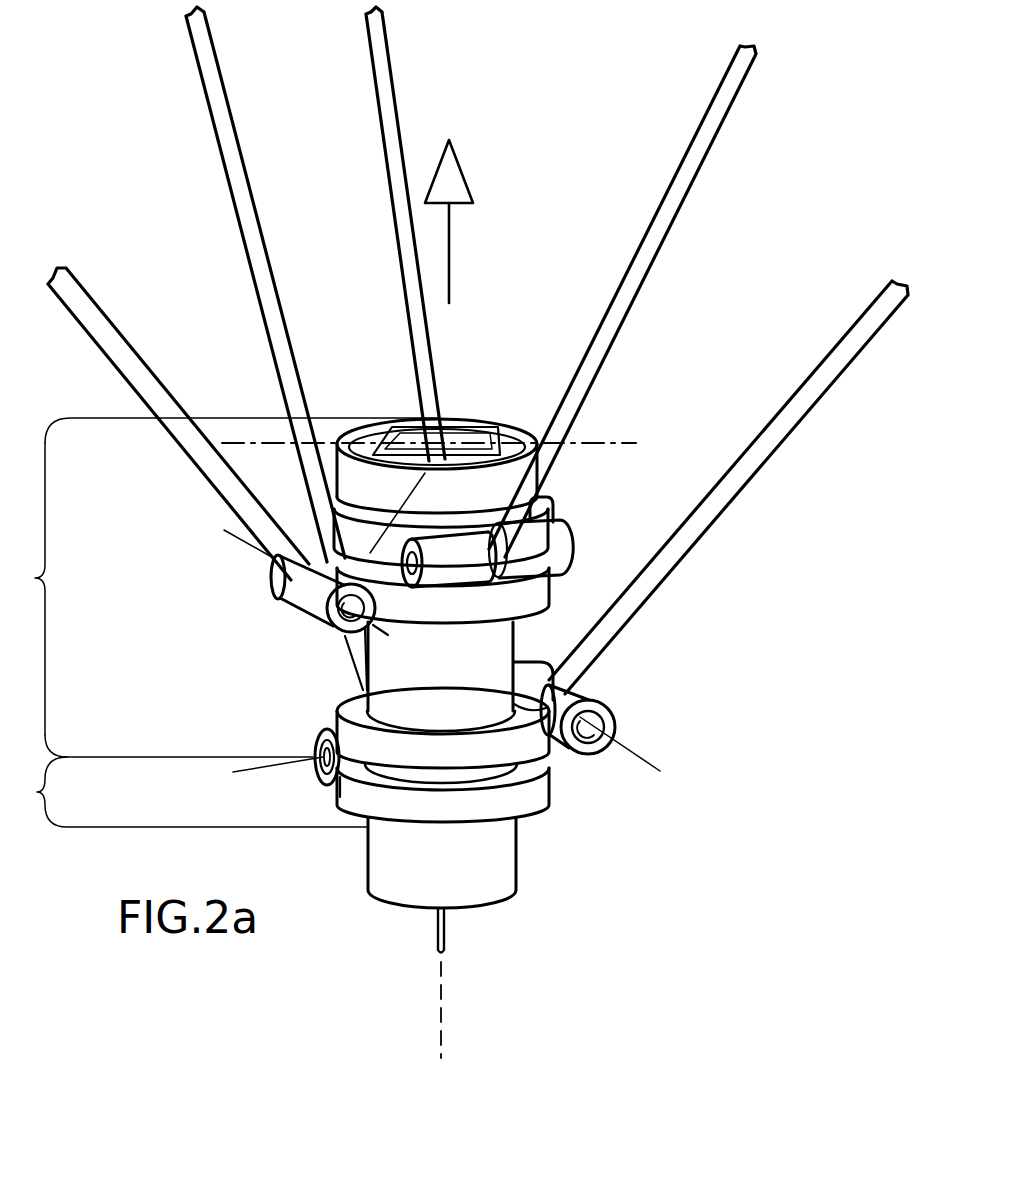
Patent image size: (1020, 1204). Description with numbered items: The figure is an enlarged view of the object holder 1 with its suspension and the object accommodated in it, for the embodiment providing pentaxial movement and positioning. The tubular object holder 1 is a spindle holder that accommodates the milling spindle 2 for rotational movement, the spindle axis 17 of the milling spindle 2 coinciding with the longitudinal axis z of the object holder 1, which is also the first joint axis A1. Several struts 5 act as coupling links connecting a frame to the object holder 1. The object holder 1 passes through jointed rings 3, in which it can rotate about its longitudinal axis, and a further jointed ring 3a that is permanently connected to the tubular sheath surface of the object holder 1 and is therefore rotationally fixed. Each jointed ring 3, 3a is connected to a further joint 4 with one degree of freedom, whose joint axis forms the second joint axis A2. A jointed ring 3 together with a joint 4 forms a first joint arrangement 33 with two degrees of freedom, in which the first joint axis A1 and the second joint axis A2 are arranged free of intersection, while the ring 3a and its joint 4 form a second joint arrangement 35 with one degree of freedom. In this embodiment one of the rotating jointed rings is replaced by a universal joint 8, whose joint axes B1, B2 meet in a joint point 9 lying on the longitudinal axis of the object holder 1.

The object holder 1 is at (487, 848).
The milling spindle 2 is at (447, 929).
The jointed ring 3 is at (548, 509).
The jointed ring 3a is at (350, 793).
The joint 4 is at (552, 538).
The strut 5 is at (385, 153).
The universal joint 8 is at (503, 390).
The joint point 9 is at (432, 403).
The spindle axis 17 is at (443, 1015).
The first joint arrangement 33 is at (218, 587).
The second joint arrangement 35 is at (183, 792).
The first joint axis A1 is at (457, 204).
The second joint axis A2 is at (718, 745).
The joint axis B1 is at (611, 443).
The joint axis B2 is at (455, 430).